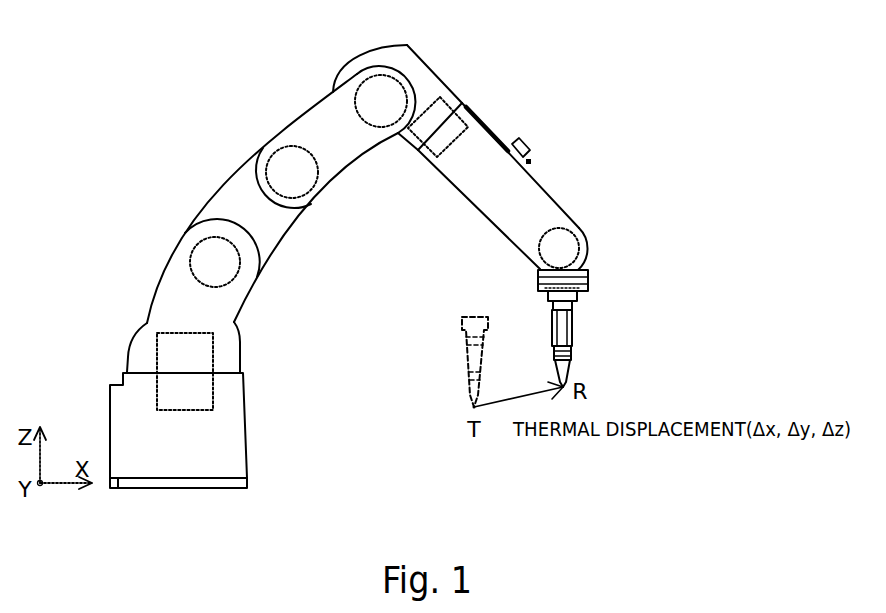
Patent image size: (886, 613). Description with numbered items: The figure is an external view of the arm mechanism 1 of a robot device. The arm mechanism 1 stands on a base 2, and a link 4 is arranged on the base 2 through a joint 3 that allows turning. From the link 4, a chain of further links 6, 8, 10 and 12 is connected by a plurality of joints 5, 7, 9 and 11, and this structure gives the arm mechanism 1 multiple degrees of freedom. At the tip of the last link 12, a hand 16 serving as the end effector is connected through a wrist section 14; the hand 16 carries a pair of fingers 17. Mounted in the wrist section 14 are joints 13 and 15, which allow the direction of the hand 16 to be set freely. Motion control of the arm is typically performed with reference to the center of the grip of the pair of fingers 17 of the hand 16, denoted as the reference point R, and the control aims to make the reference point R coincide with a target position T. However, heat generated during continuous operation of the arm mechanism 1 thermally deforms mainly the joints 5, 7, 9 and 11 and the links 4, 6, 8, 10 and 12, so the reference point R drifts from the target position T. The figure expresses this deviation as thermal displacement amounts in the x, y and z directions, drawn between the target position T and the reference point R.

The arm mechanism 1 is at (195, 84).
The base 2 is at (245, 413).
The joint 3 is at (157, 345).
The link 4 is at (167, 277).
The joint 5 is at (197, 240).
The link 6 is at (217, 194).
The joint 7 is at (275, 155).
The link 8 is at (313, 108).
The joint 9 is at (358, 80).
The link 10 is at (430, 64).
The joint 11 is at (467, 108).
The link 12 is at (550, 190).
The joint 13 is at (577, 230).
The wrist section 14 is at (592, 269).
The joint 15 is at (540, 280).
The hand 16 is at (574, 338).
The fingers 17 is at (573, 372).